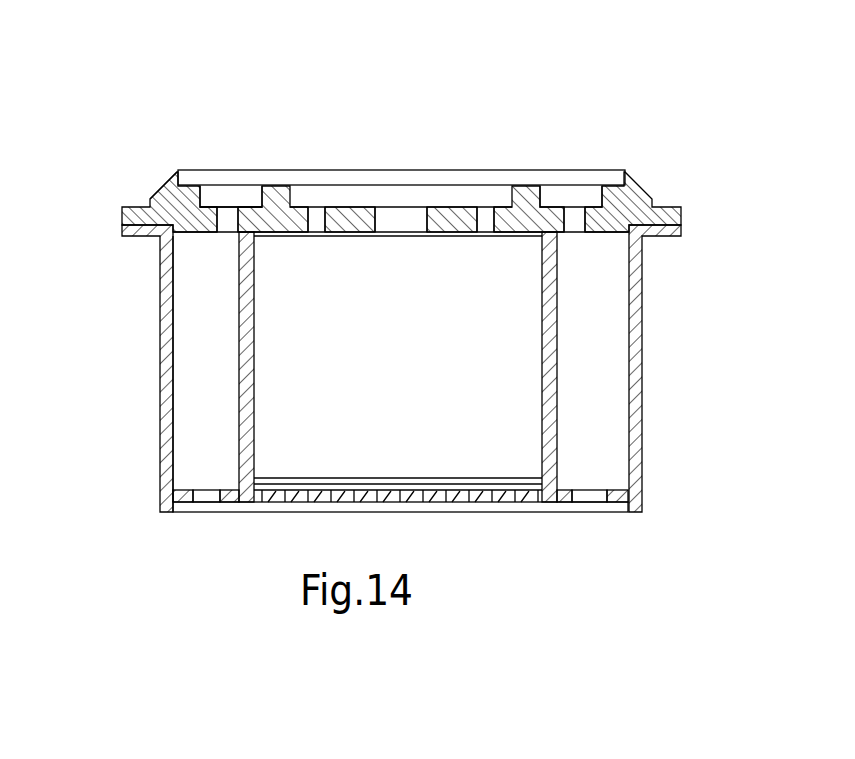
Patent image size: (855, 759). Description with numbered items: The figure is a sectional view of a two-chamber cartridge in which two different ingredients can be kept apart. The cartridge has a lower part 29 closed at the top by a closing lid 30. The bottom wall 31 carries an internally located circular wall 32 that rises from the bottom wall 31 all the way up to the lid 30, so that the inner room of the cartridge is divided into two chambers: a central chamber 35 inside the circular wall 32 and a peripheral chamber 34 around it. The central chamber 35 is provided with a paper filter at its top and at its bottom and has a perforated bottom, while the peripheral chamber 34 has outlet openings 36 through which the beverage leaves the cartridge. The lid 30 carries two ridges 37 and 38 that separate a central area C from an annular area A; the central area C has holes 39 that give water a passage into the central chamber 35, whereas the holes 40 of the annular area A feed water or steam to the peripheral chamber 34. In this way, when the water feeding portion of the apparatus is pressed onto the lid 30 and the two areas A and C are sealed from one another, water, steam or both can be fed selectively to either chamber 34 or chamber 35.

The lower part 29 is at (641, 357).
The closing lid 30 is at (620, 207).
The bottom wall 31 is at (543, 508).
The circular wall 32 is at (238, 405).
The peripheral chamber 34 is at (186, 333).
The central chamber 35 is at (500, 308).
The outlet openings 36 is at (203, 495).
The ridge 37 is at (173, 172).
The ridge 38 is at (300, 190).
The holes 39 is at (398, 220).
The holes 40 is at (229, 222).
The annular area A is at (204, 178).
The central area C is at (384, 180).